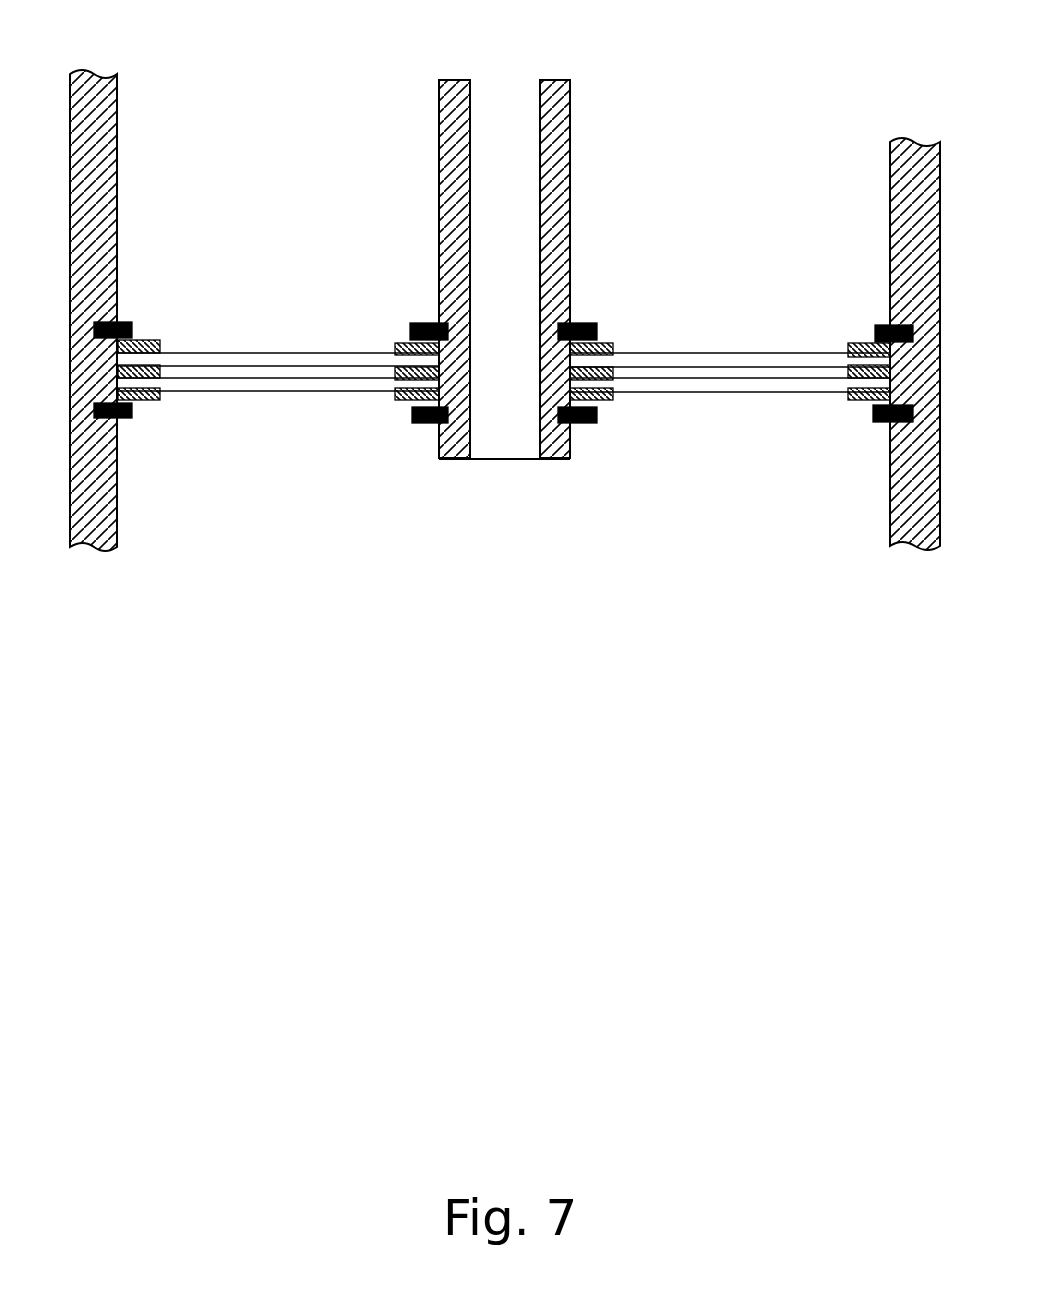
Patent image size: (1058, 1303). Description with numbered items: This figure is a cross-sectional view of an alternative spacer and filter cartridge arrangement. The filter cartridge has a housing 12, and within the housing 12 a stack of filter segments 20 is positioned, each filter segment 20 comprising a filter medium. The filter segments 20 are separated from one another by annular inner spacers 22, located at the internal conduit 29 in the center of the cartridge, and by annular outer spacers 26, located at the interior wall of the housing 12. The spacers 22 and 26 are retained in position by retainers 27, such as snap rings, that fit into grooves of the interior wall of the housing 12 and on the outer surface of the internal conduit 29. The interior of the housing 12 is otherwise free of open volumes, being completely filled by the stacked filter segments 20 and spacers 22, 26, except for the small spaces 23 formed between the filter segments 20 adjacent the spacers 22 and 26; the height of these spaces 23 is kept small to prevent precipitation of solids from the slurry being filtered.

The housing 12 is at (905, 148).
The internal conduit 29 is at (570, 157).
The filter segments 20 is at (290, 384).
The annular inner spacers 22 is at (395, 392).
The small spaces 23 is at (208, 372).
The annular outer spacers 26 is at (172, 382).
The retainers 27 is at (420, 320).